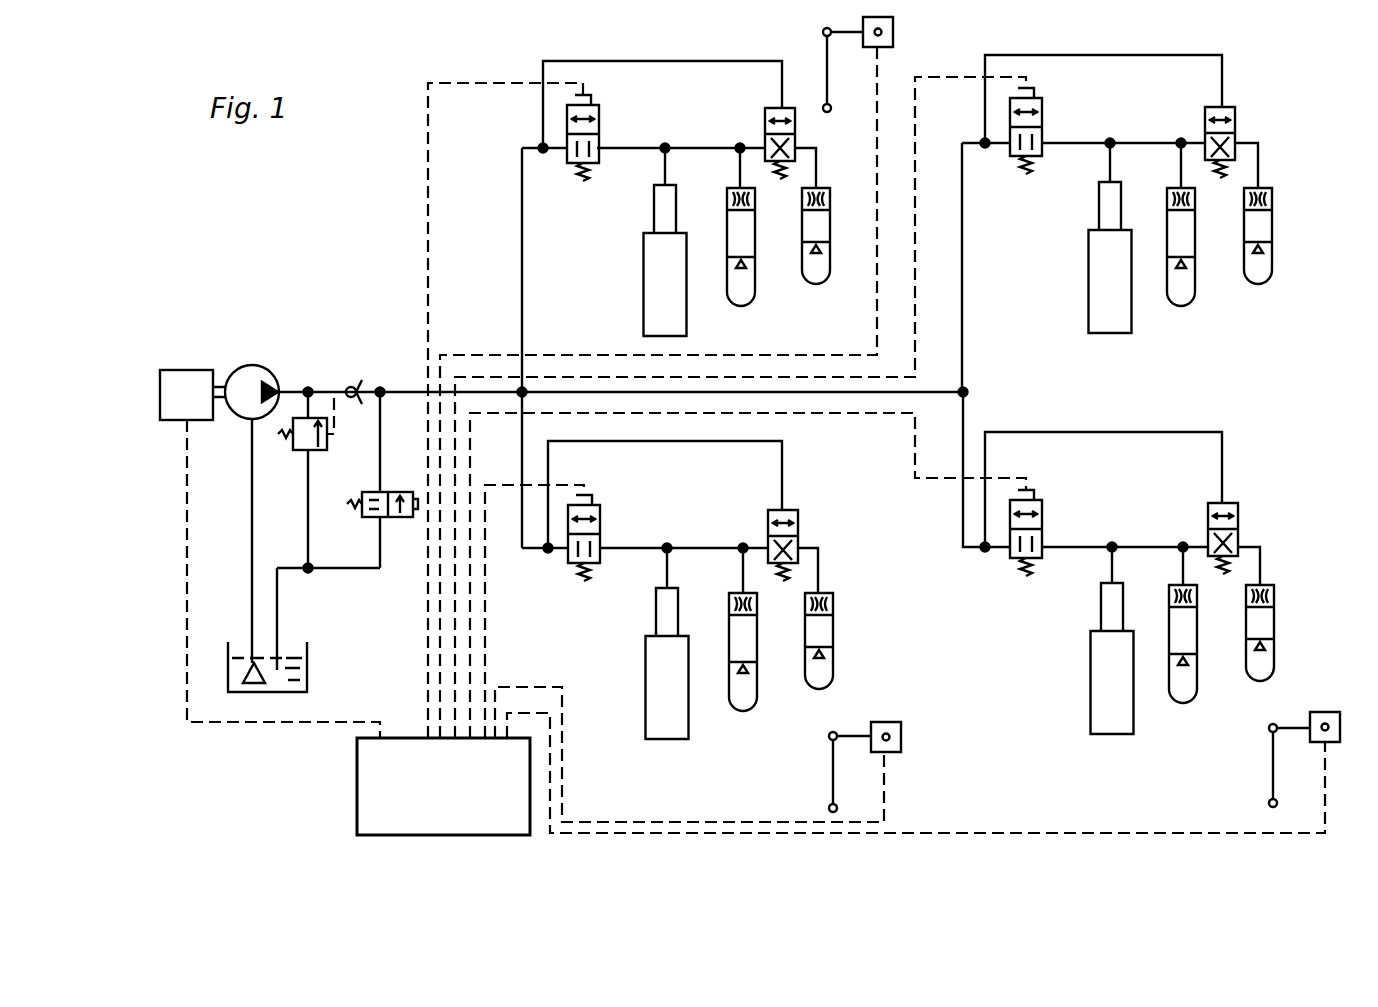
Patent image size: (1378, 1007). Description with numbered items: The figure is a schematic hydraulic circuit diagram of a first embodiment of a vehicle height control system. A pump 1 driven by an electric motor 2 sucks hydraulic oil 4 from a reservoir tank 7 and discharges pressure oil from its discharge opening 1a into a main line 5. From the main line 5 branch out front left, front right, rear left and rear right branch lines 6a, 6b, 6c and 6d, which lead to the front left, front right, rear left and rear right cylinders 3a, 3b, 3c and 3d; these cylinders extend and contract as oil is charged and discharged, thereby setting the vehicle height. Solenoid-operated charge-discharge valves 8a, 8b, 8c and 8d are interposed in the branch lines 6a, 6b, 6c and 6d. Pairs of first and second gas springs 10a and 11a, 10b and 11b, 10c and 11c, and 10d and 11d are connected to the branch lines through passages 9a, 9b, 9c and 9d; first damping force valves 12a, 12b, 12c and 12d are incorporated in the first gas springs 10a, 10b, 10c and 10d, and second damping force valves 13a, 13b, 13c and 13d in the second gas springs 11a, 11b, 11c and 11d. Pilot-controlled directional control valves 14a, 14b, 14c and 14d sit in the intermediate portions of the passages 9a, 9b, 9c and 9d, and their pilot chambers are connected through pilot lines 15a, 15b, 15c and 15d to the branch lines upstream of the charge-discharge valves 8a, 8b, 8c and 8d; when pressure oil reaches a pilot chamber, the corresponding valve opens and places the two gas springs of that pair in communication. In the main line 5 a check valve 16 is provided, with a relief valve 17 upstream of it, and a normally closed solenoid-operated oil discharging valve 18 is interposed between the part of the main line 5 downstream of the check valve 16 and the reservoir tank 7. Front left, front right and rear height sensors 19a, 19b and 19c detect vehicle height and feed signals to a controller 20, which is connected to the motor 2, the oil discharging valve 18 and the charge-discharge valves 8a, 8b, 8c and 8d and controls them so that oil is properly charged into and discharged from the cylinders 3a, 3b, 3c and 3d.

The pump 1 is at (262, 366).
The discharge opening 1a is at (274, 378).
The electric motor 2 is at (205, 368).
The front left cylinder 3a is at (648, 684).
The front right cylinder 3b is at (643, 260).
The rear left cylinder 3c is at (1090, 680).
The rear right cylinder 3d is at (1128, 318).
The hydraulic oil 4 is at (310, 690).
The main line 5 is at (401, 396).
The front left branch line 6a is at (545, 555).
The front right branch line 6b is at (522, 204).
The rear left branch line 6c is at (963, 548).
The rear right branch line 6d is at (962, 205).
The reservoir tank 7 is at (308, 646).
The front left charge-discharge valve 8a is at (600, 524).
The front right charge-discharge valve 8b is at (597, 124).
The rear left charge-discharge valve 8c is at (1043, 520).
The rear right charge-discharge valve 8d is at (1042, 115).
The passage 9a is at (714, 548).
The passage 9b is at (816, 152).
The passage 9c is at (1260, 554).
The passage 9d is at (1258, 142).
The first gas spring 10a is at (743, 712).
The first gas spring 10b is at (756, 294).
The first gas spring 10c is at (1183, 705).
The first gas spring 10d is at (1195, 310).
The second gas spring 11a is at (835, 680).
The second gas spring 11b is at (830, 290).
The second gas spring 11c is at (1262, 675).
The second gas spring 11d is at (1273, 268).
The first damping force valve 12a is at (730, 604).
The first damping force valve 12b is at (727, 198).
The first damping force valve 12c is at (1169, 600).
The first damping force valve 12d is at (1168, 190).
The second damping force valve 13a is at (835, 606).
The second damping force valve 13b is at (830, 198).
The second damping force valve 13c is at (1275, 598).
The second damping force valve 13d is at (1273, 197).
The front left pilot-controlled directional control valve 14a is at (798, 520).
The front right pilot-controlled directional control valve 14b is at (765, 121).
The rear left pilot-controlled directional control valve 14c is at (1238, 531).
The rear right pilot-controlled directional control valve 14d is at (1235, 110).
The pilot line 15a is at (660, 441).
The pilot line 15b is at (682, 61).
The pilot line 15c is at (1112, 432).
The pilot line 15d is at (1102, 55).
The check valve 16 is at (352, 378).
The relief valve 17 is at (327, 445).
The oil discharging valve 18 is at (395, 517).
The front left height sensor 19a is at (899, 735).
The front right height sensor 19b is at (893, 35).
The rear height sensor 19c is at (1326, 712).
The controller 20 is at (357, 780).